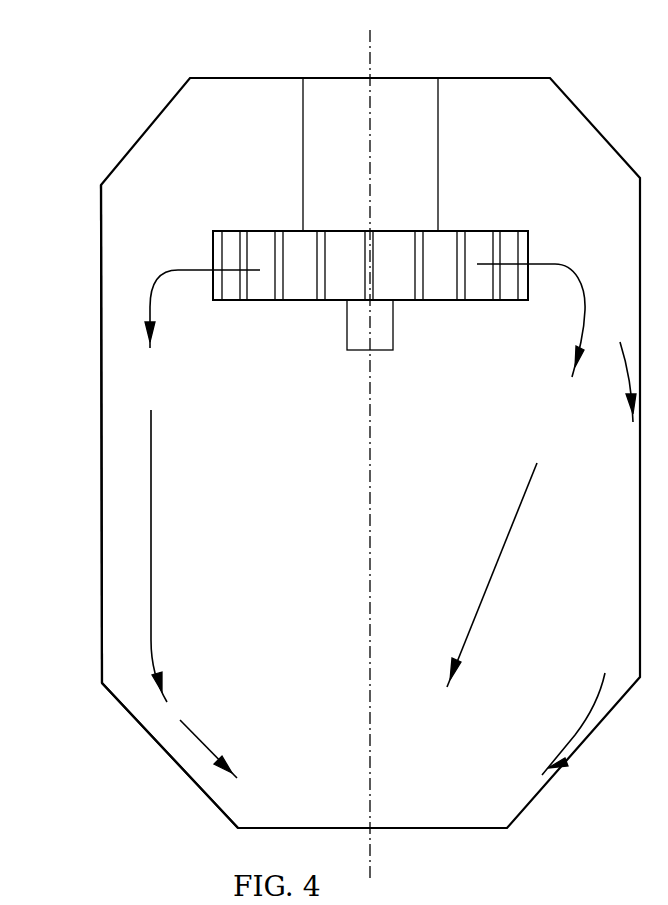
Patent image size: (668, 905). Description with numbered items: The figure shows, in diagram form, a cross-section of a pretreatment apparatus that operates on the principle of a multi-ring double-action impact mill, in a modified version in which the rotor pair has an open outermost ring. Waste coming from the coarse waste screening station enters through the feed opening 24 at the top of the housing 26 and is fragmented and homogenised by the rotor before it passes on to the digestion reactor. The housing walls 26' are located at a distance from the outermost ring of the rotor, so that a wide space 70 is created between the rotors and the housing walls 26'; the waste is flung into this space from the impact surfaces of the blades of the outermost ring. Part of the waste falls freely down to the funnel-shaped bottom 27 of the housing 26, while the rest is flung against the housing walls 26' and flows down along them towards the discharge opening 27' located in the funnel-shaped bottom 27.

The feed opening 24 is at (370, 154).
The housing 26 is at (370, 424).
The housing walls 26' is at (167, 434).
The funnel-shaped bottom 27 is at (170, 760).
The discharge opening 27' is at (372, 852).
The wide space 70 is at (624, 323).